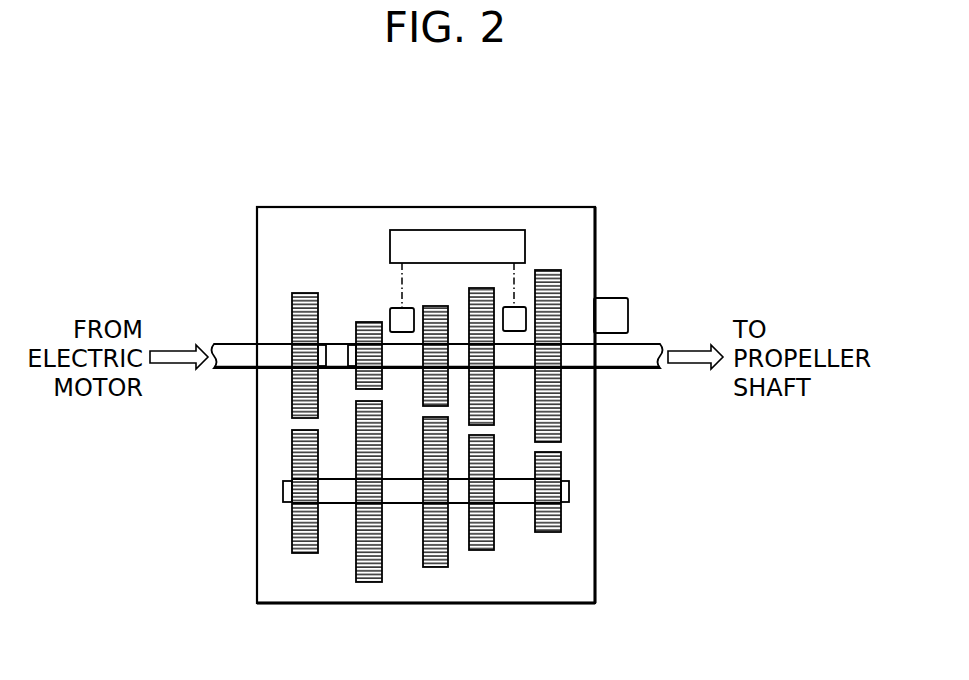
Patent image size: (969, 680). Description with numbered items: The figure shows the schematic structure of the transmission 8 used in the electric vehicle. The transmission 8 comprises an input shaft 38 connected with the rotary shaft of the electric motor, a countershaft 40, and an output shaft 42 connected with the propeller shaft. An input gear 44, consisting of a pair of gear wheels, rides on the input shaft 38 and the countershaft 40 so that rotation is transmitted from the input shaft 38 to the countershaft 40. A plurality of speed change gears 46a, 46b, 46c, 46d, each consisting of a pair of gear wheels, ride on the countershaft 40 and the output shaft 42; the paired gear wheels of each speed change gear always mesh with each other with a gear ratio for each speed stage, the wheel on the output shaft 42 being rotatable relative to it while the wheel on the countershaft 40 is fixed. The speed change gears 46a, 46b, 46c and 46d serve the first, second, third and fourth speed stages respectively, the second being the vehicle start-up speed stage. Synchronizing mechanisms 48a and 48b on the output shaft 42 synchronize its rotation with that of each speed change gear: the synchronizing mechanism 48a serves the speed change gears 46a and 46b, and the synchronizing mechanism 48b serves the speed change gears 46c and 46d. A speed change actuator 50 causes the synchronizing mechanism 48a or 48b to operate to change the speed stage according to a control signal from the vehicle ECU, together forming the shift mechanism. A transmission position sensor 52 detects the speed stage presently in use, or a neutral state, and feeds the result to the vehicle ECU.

The transmission 8 is at (595, 183).
The input shaft 38 is at (233, 350).
The countershaft 40 is at (570, 490).
The output shaft 42 is at (642, 357).
The input gear 44 is at (302, 554).
The speed change gear 46a is at (548, 532).
The speed change gear 46b is at (480, 550).
The speed change gear 46c is at (432, 567).
The speed change gear 46d is at (369, 582).
The synchronizing mechanism 48a is at (520, 307).
The synchronizing mechanism 48b is at (396, 308).
The speed change actuator 50 is at (450, 243).
The transmission position sensor 52 is at (612, 312).